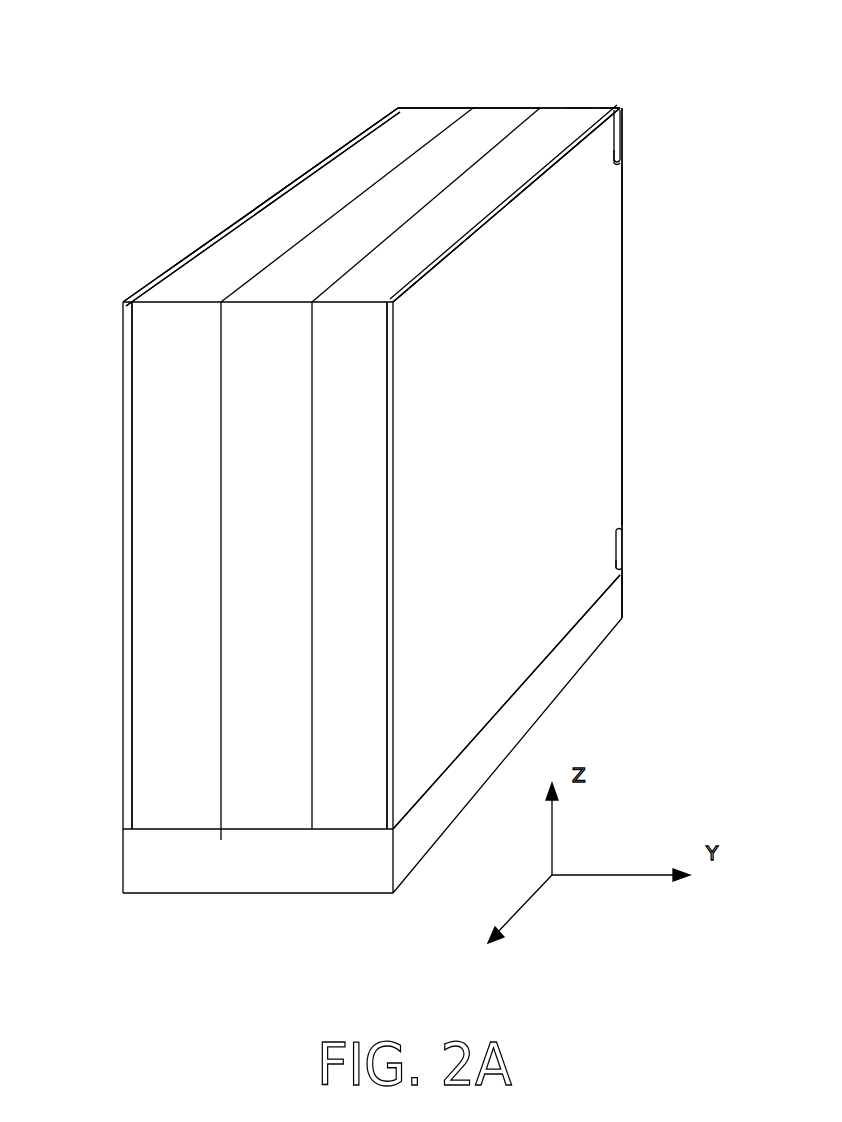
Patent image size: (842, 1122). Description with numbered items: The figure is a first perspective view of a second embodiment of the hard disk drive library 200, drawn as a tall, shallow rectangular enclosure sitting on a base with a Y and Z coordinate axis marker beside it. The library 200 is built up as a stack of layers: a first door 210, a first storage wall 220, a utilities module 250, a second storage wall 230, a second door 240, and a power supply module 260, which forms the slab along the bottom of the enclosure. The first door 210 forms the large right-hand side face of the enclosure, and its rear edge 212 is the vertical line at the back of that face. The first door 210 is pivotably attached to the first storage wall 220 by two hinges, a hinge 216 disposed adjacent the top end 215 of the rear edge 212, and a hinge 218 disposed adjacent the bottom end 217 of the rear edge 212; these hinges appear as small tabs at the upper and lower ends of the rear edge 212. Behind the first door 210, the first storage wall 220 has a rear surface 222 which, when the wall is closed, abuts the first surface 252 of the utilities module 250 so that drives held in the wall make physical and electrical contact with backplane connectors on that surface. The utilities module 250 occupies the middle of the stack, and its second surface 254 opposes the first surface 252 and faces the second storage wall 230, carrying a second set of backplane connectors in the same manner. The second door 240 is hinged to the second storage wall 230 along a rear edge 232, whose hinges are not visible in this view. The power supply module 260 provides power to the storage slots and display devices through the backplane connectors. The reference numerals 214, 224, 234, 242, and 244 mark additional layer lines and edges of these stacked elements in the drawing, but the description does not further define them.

The hard disk drive library 200 is at (292, 900).
The first door 210 is at (558, 416).
The rear edge 212 is at (624, 310).
The front face 214 is at (422, 517).
The top end 215 is at (624, 117).
The hinge 216 is at (624, 156).
The bottom end 217 is at (624, 566).
The hinge 218 is at (624, 528).
The first storage wall 220 is at (577, 108).
The rear surface 222 is at (533, 153).
The layer 224 is at (477, 108).
The second storage wall 230 is at (298, 203).
The rear edge 232 is at (412, 108).
The layer 234 is at (174, 287).
The second door 240 is at (252, 214).
The layer 242 is at (386, 126).
The layer 244 is at (123, 301).
The utilities module 250 is at (388, 203).
The first surface 252 is at (527, 108).
The second surface 254 is at (262, 288).
The power supply module 260 is at (190, 875).